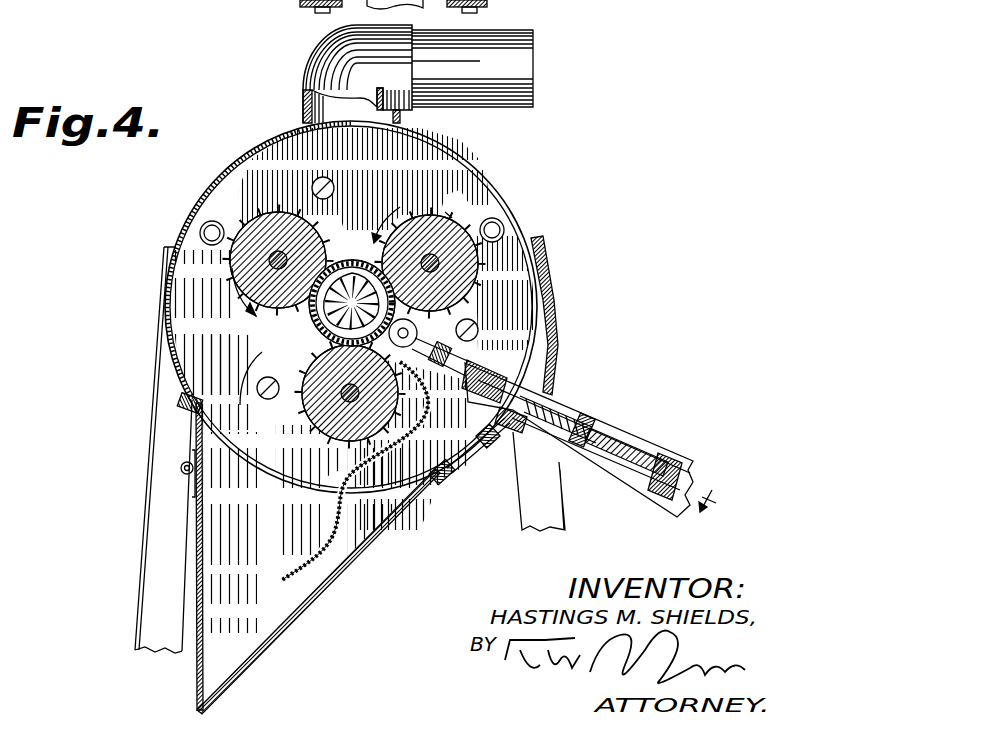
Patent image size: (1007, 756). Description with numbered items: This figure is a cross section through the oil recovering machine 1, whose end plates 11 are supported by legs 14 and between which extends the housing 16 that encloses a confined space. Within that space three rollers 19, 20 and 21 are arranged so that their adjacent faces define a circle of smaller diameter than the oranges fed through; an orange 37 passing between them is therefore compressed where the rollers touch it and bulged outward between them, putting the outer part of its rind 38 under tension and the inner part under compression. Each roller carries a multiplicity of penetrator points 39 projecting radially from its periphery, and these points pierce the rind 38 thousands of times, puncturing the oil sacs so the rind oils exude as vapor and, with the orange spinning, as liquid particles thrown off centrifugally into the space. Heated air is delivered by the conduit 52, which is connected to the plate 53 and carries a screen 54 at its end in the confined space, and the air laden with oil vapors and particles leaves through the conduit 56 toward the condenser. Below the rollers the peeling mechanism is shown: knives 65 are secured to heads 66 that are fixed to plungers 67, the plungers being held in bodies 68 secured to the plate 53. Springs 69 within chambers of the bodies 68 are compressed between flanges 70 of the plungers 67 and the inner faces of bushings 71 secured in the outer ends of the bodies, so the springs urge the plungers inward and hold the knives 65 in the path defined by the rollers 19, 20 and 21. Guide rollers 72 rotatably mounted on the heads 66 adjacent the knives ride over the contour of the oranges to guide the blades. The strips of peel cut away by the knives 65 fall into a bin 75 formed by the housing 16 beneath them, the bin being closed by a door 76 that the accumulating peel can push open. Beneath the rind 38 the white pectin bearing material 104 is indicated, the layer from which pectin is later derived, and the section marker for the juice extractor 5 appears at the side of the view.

The machine 1 is at (527, 217).
The juice extractor 5 is at (244, 232).
The end plates 11 is at (198, 313).
The legs 14 is at (152, 437).
The housing 16 is at (212, 183).
The roller 19 is at (273, 213).
The roller 20 is at (445, 240).
The roller 21 is at (320, 414).
The orange 37 is at (352, 262).
The rind 38 is at (318, 315).
The penetrator points 39 is at (442, 226).
The conduit 52 is at (660, 447).
The plate 53 is at (490, 450).
The screen 54 is at (552, 338).
The conduit 56 is at (533, 60).
The knives 65 is at (433, 475).
The heads 66 is at (466, 358).
The plungers 67 is at (556, 362).
The bodies 68 is at (585, 420).
The springs 69 is at (620, 440).
The flanges 70 is at (530, 442).
The bushings 71 is at (633, 445).
The guide rollers 72 is at (414, 326).
The bin 75 is at (280, 604).
The door 76 is at (196, 573).
The pectin bearing material 104 is at (300, 347).